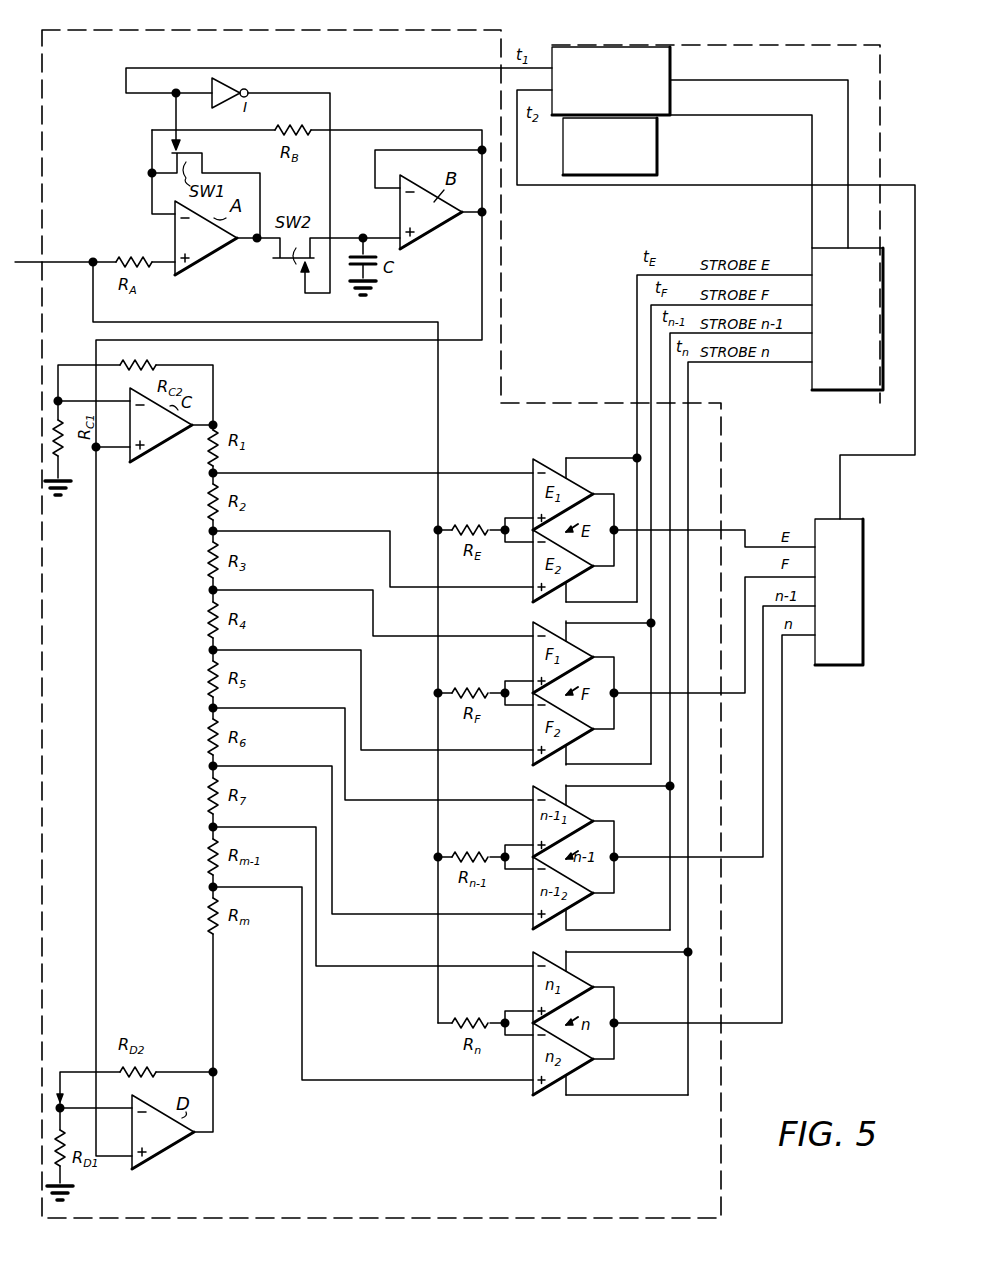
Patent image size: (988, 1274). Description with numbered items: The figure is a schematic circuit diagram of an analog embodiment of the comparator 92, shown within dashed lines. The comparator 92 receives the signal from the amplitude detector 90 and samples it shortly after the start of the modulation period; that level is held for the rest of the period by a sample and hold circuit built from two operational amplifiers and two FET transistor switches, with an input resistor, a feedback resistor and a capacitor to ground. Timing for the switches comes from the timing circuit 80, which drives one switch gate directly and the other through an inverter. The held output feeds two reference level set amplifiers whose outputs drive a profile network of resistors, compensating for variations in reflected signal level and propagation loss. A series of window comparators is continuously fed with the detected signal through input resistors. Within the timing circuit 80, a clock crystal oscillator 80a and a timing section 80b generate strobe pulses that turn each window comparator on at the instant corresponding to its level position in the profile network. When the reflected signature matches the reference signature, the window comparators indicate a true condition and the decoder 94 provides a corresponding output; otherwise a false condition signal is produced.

The comparator 92 is at (440, 14).
The timing circuit 80 is at (666, 46).
The clock crystal oscillator 80a is at (658, 170).
The timing section 80b is at (812, 386).
The decoder 94 is at (825, 519).
The amplitude detector 90 is at (69, 227).